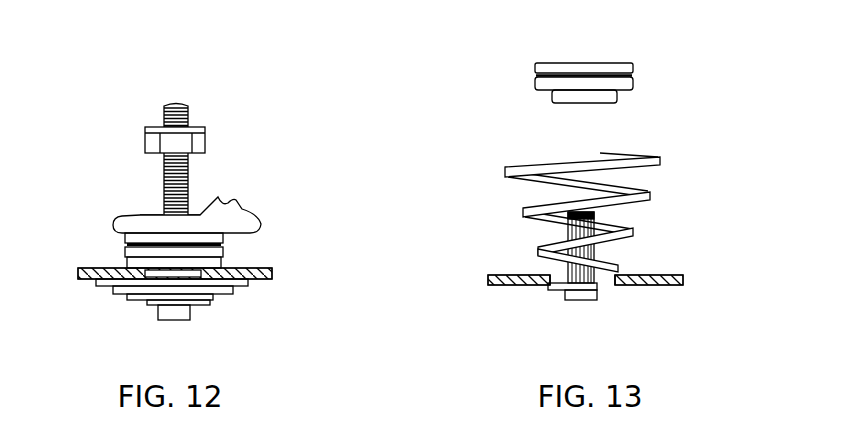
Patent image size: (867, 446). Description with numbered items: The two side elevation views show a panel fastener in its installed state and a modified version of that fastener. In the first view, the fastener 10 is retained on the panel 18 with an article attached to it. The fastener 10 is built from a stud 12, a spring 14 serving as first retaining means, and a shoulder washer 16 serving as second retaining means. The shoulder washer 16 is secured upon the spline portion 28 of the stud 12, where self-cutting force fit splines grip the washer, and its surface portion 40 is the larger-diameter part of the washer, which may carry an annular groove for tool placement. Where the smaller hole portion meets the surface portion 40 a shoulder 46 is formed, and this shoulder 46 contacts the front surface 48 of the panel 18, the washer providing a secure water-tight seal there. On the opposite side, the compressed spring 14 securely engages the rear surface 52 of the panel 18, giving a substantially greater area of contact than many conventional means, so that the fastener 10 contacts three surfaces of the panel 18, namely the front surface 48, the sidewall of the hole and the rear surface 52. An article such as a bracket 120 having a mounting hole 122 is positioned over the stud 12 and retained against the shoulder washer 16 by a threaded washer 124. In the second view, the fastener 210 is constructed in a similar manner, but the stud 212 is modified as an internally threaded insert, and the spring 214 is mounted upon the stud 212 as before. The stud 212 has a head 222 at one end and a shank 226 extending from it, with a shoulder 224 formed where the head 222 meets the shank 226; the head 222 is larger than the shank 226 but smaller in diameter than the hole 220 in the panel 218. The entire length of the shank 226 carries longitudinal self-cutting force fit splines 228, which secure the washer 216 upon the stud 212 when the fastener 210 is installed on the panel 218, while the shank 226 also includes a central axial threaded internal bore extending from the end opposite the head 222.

In FIG. 12, the fastener 10 is at (155, 214).
In FIG. 12, the stud 12 is at (158, 170).
In FIG. 12, the spring 14 is at (231, 303).
In FIG. 12, the shoulder washer 16 is at (224, 236).
In FIG. 12, the panel 18 is at (265, 275).
In FIG. 12, the spline portion 28 is at (163, 278).
In FIG. 12, the surface portion 40 is at (160, 280).
In FIG. 12, the shoulder 46 is at (228, 251).
In FIG. 12, the front surface 48 is at (112, 268).
In FIG. 12, the rear surface 52 is at (262, 284).
In FIG. 12, the bracket 120 is at (233, 203).
In FIG. 12, the mounting hole 122 is at (132, 208).
In FIG. 12, the threaded washer 124 is at (207, 125).
In FIG. 13, the fastener 210 is at (481, 231).
In FIG. 13, the stud 212 is at (565, 268).
In FIG. 13, the spring 214 is at (643, 150).
In FIG. 13, the washer 216 is at (632, 80).
In FIG. 13, the panel 218 is at (483, 283).
In FIG. 13, the hole 220 is at (609, 285).
In FIG. 13, the head 222 is at (565, 294).
In FIG. 13, the shoulder 224 is at (567, 291).
In FIG. 13, the shank 226 is at (596, 244).
In FIG. 13, the splines 228 is at (565, 226).